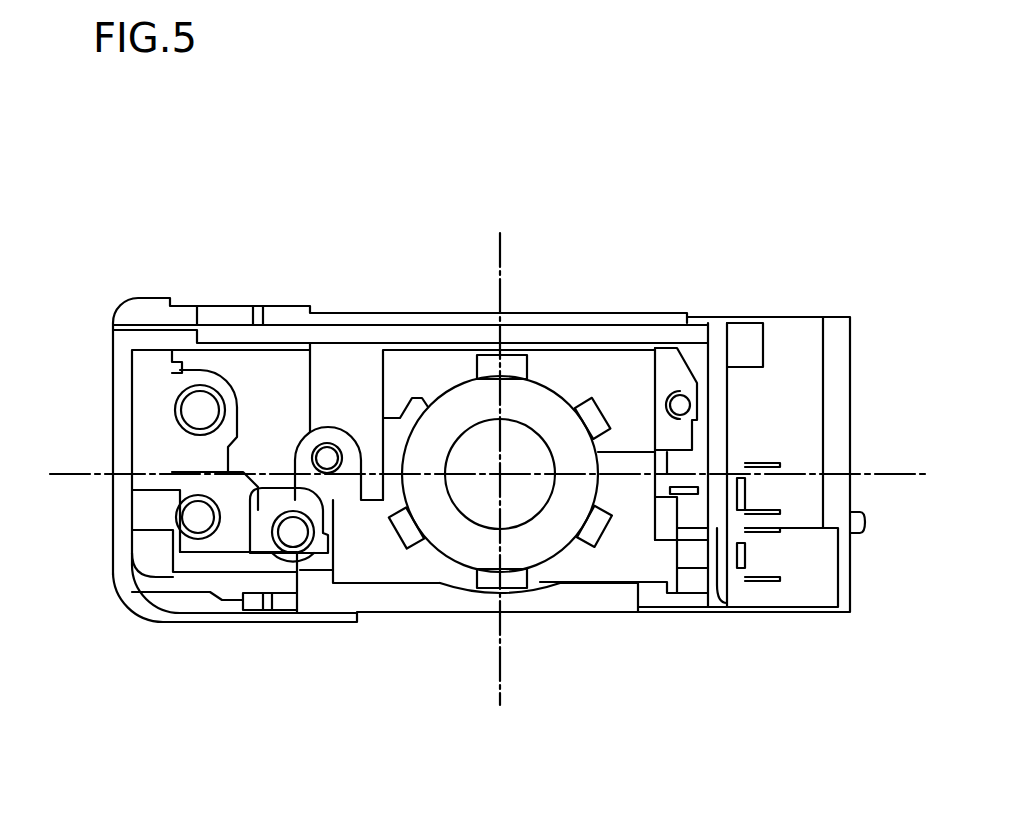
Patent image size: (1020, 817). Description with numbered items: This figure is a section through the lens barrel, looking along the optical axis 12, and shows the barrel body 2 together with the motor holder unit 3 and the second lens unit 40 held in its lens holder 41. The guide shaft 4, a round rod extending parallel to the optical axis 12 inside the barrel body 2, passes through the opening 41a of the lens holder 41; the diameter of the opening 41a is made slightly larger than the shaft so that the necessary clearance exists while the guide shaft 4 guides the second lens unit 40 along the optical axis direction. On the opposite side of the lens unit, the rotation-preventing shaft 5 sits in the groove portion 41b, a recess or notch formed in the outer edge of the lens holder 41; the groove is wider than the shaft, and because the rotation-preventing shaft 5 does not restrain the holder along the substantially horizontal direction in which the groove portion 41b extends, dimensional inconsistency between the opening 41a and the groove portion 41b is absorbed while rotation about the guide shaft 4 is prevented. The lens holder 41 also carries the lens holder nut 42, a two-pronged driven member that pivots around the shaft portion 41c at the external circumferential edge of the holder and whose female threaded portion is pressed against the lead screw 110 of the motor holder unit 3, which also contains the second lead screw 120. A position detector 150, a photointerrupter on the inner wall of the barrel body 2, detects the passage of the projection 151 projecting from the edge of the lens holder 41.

The barrel body 2 is at (682, 333).
The motor holder unit 3 is at (120, 428).
The guide shaft 4 is at (327, 458).
The rotation-preventing shaft 5 is at (680, 405).
The optical axis 12 is at (500, 474).
The second lens unit 40 is at (478, 453).
The lens holder 41 is at (466, 543).
The opening 41a is at (347, 485).
The groove portion 41b is at (663, 388).
The shaft portion 41c is at (293, 532).
The lens holder nut 42 is at (228, 542).
The lead screw 110 is at (198, 517).
The lead screw 120 is at (200, 410).
The position detector 150 is at (695, 512).
The projection 151 is at (672, 490).